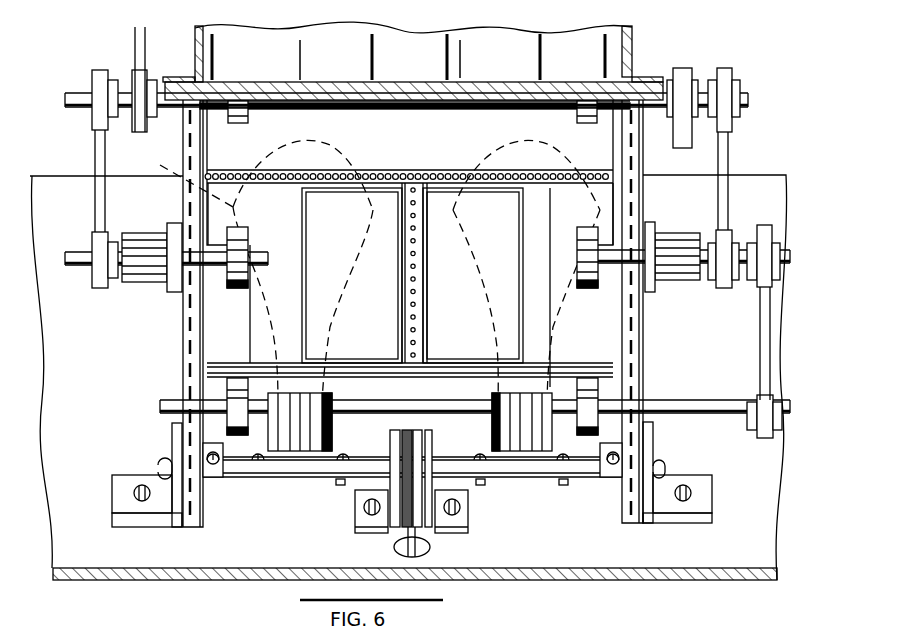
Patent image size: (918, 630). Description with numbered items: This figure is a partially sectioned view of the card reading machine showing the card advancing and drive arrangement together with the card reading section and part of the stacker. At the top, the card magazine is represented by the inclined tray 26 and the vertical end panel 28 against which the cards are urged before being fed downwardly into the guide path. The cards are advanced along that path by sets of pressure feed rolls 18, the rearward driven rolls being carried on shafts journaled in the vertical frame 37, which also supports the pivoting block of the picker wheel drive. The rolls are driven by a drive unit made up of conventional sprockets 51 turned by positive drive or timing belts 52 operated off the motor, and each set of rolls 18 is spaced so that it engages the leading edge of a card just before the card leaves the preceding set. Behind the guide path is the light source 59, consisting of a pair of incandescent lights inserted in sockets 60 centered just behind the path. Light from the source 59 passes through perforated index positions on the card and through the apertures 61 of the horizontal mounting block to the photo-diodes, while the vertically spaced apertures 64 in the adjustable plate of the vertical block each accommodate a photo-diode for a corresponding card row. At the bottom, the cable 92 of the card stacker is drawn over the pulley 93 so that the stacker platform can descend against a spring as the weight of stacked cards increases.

The pressure feed rolls 18 is at (227, 283).
The tray 26 is at (204, 63).
The vertical end panel 28 is at (625, 45).
The vertical frame 37 is at (183, 340).
The sprockets 51 is at (92, 80).
The timing belts 52 is at (135, 41).
The light source 59 is at (165, 167).
The sockets 60 is at (296, 457).
The apertures 61 is at (392, 172).
The vertically spaced apertures 64 is at (418, 291).
The cable 92 is at (428, 537).
The pulley 93 is at (407, 507).